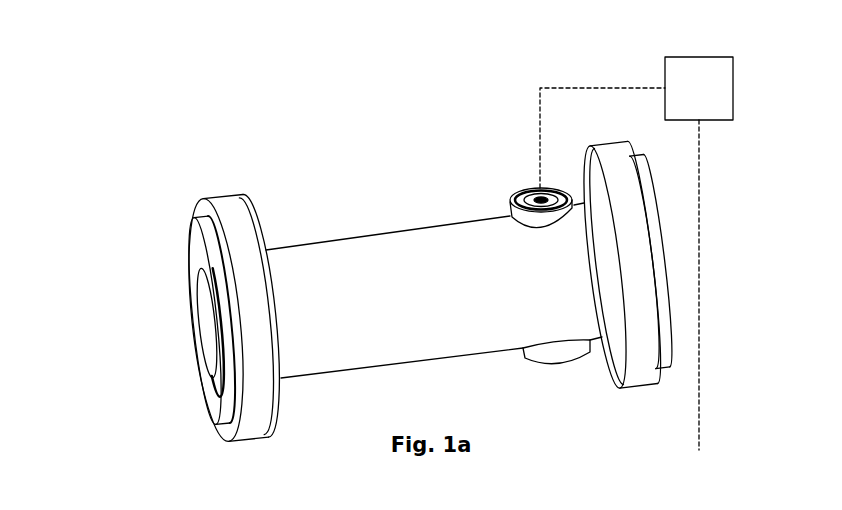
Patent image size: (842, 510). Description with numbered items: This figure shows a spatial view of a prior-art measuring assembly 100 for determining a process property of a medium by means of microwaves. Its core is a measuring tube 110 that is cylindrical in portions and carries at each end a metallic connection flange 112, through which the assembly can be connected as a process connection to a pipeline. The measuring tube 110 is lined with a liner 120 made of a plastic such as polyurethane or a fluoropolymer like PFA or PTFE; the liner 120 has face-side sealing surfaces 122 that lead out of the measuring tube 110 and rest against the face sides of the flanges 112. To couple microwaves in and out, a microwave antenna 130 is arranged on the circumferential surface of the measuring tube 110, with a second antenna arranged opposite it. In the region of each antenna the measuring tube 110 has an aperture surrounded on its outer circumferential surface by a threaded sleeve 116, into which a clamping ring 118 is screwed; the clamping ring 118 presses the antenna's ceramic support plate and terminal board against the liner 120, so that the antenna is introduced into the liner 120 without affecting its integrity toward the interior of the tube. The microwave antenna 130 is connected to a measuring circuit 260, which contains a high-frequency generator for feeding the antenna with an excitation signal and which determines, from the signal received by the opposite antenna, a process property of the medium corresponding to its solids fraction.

The measuring assembly 100 is at (228, 143).
The measuring tube 110 is at (462, 229).
The connection flange 112 is at (233, 212).
The threaded sleeve 116 is at (518, 194).
The clamping ring 118 is at (527, 192).
The liner 120 is at (210, 312).
The sealing surface 122 is at (217, 396).
The microwave antenna 130 is at (738, 285).
The measuring circuit 260 is at (636, 122).